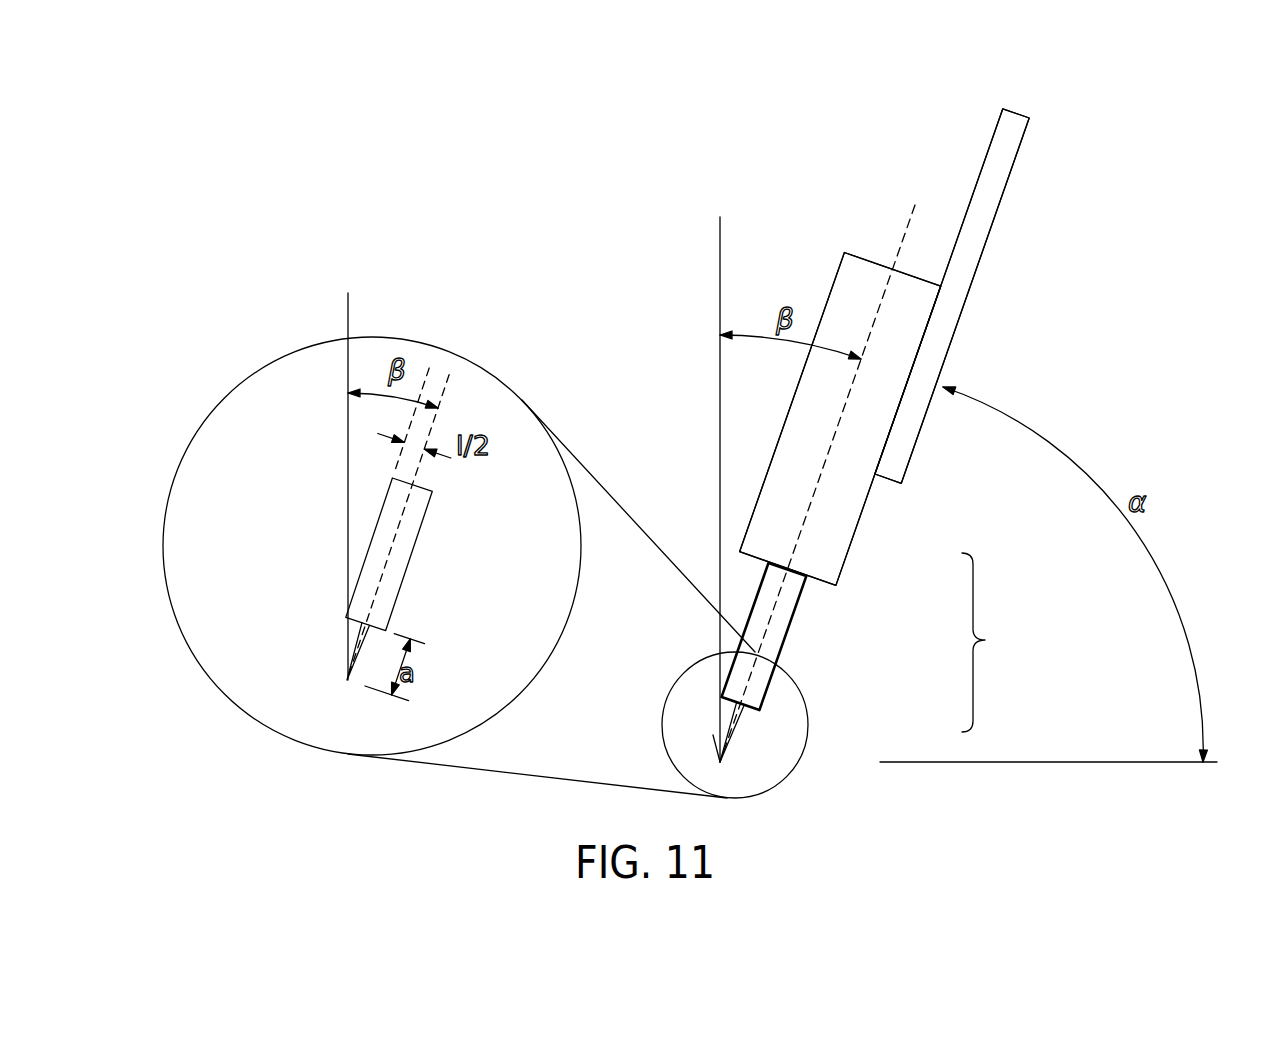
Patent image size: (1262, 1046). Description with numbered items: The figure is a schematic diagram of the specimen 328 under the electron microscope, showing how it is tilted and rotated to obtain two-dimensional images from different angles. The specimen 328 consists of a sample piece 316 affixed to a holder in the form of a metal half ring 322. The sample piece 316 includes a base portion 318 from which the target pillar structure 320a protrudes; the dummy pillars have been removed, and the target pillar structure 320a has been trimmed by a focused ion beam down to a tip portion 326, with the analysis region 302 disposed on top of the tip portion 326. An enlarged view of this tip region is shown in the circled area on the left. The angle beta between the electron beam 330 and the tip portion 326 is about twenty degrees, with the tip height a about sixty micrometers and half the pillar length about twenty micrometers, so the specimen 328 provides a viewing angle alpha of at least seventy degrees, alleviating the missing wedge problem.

The electron microscope specimen 328 is at (1103, 148).
The metal half ring 322 is at (958, 292).
The base portion 318 is at (838, 567).
The electron beam 330 is at (720, 389).
The target pillar structure 320a is at (786, 611).
The tip portion 326 is at (743, 720).
The analysis region 302 is at (722, 763).
The sample piece 316 is at (985, 640).